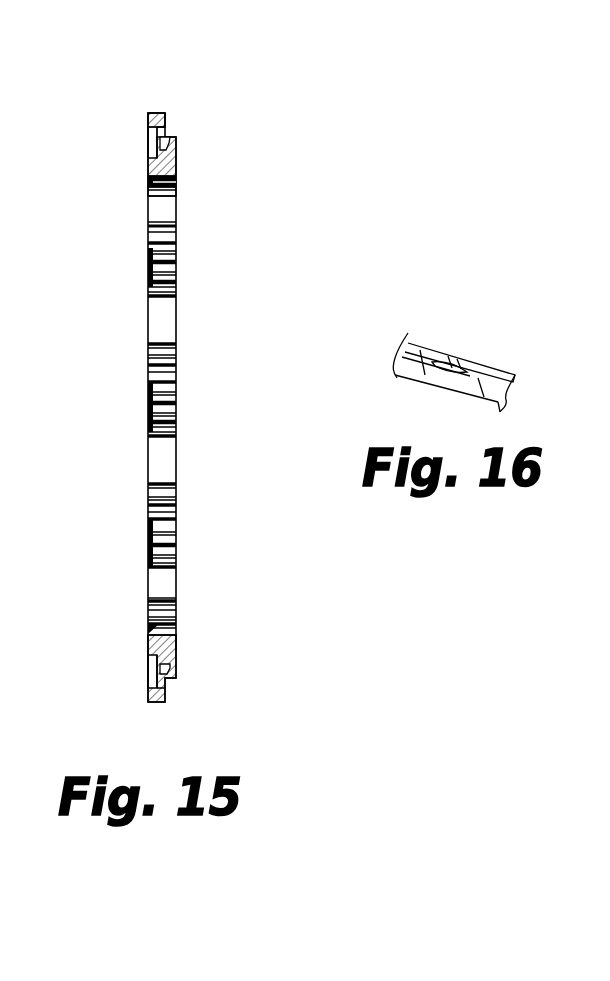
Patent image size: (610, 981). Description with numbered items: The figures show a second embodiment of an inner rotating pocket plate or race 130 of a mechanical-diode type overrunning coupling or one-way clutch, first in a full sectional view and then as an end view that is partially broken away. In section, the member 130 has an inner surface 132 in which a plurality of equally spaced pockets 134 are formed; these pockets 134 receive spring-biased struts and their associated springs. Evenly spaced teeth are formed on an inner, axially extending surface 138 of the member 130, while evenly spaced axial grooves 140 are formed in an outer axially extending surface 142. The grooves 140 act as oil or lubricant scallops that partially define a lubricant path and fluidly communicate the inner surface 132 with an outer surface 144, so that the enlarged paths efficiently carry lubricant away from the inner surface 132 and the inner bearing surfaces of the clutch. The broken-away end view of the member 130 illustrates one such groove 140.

In FIG. 15, the inner rotating pocket plate 130 is at (180, 163).
In FIG. 16, the inner rotating pocket plate 130 is at (507, 365).
In FIG. 15, the inner surface 132 is at (148, 648).
In FIG. 15, the pockets 134 is at (148, 130).
In FIG. 15, the inner axially extending surface 138 is at (160, 188).
In FIG. 16, the axial grooves 140 is at (458, 368).
In FIG. 15, the outer axially extending surface 142 is at (157, 113).
In FIG. 15, the outer surface 144 is at (176, 650).